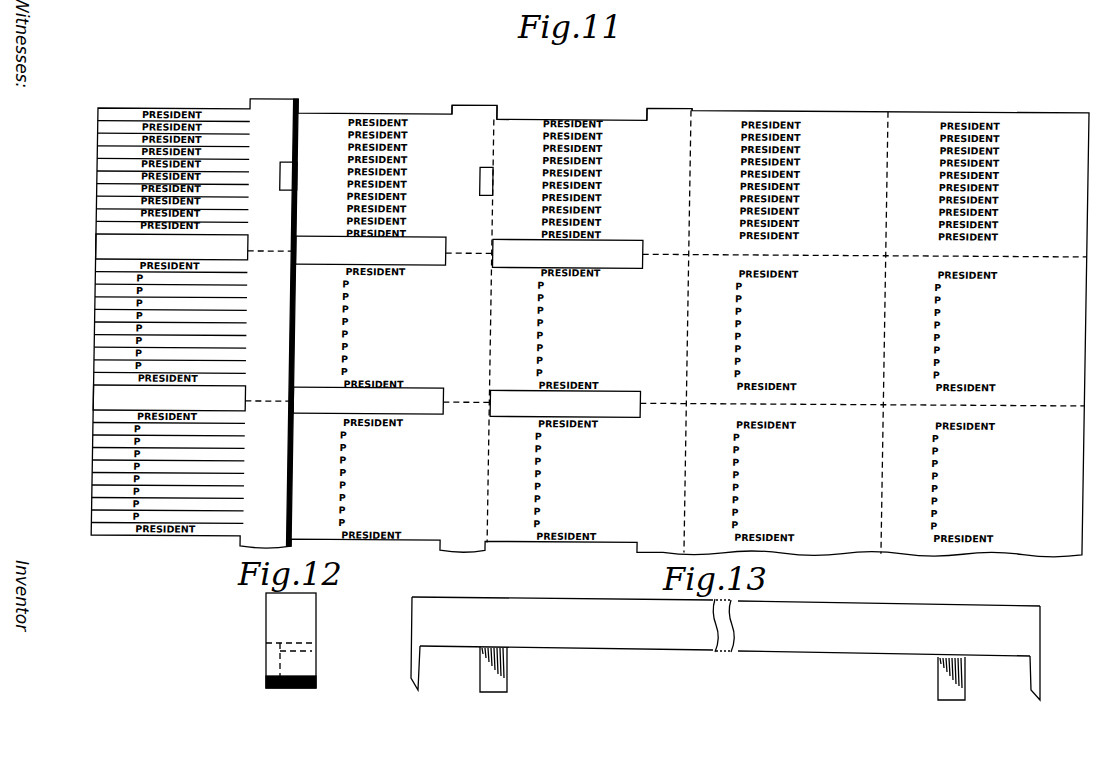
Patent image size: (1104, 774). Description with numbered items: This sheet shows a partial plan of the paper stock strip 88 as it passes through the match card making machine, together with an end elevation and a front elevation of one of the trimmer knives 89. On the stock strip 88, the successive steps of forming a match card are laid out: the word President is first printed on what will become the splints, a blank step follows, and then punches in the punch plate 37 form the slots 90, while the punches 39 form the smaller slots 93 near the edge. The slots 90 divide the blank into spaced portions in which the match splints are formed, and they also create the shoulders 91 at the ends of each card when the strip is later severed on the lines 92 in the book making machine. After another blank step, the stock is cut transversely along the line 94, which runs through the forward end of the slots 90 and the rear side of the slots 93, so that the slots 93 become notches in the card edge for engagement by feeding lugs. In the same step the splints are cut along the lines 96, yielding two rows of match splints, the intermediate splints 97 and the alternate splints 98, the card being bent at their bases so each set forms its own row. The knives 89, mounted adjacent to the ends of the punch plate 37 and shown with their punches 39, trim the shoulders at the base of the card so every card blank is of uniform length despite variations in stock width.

In FIG. 11, the stock strip 88 is at (590, 327).
In FIG. 11, the slots 90 is at (368, 325).
In FIG. 11, the shoulders 91 is at (296, 100).
In FIG. 11, the severing lines 92 is at (273, 252).
In FIG. 11, the slots (notches) 93 is at (283, 179).
In FIG. 11, the severing line 94 is at (296, 290).
In FIG. 11, the cutting lines 96 is at (100, 150).
In FIG. 11, the match splints (intermediate row) 97 is at (104, 112).
In FIG. 11, the match splints (alternate row) 98 is at (100, 124).
In FIG. 13, the punch plate 37 is at (726, 626).
In FIG. 12, the punches 39 is at (317, 650).
In FIG. 13, the punches 39 is at (497, 685).
In FIG. 12, the knives 89 is at (274, 676).
In FIG. 13, the knives 89 is at (413, 681).